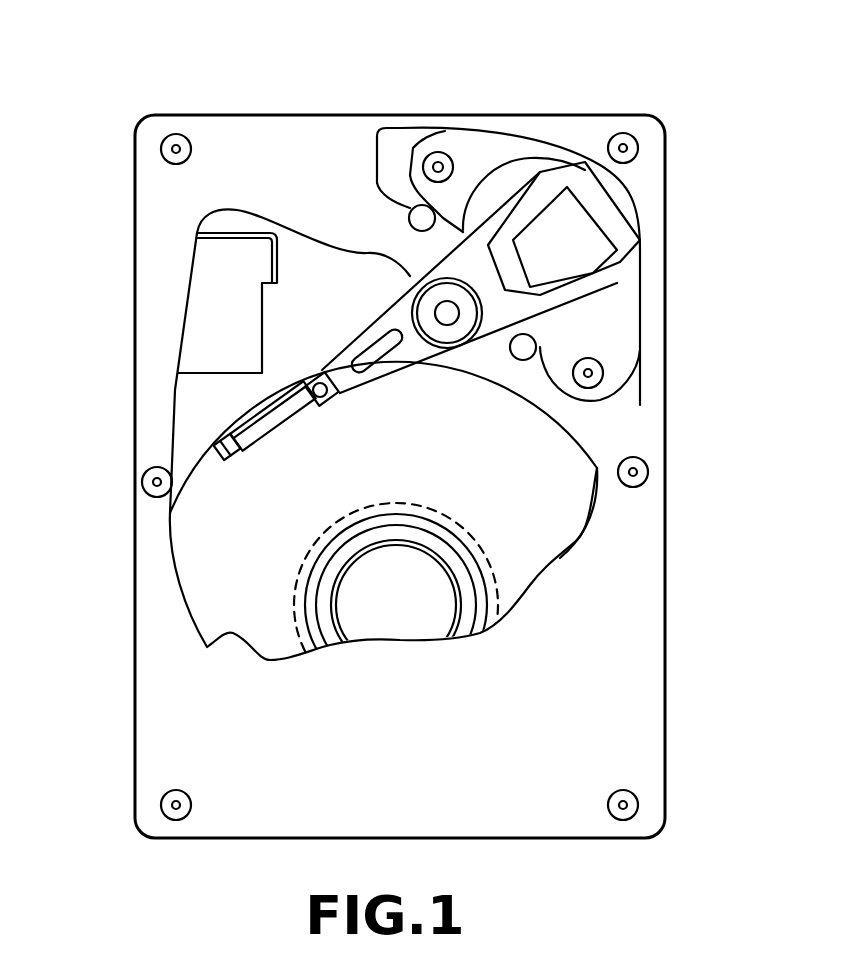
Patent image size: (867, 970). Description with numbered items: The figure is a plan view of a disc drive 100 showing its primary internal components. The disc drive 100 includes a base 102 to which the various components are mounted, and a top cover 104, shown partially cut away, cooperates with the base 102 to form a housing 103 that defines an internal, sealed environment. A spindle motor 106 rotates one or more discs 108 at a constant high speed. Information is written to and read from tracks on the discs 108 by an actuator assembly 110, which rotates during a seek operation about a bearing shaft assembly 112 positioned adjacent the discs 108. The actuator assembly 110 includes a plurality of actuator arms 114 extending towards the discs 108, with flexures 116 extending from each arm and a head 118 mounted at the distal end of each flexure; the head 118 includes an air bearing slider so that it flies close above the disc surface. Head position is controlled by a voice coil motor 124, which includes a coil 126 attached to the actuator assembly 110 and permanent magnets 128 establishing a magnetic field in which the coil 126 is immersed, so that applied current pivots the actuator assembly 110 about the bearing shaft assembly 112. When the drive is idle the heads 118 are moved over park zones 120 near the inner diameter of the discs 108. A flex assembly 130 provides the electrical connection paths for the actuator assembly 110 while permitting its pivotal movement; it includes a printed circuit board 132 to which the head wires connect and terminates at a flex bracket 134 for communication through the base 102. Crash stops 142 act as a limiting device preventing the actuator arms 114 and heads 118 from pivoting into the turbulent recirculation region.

The disc drive 100 is at (175, 76).
The base 102 is at (200, 432).
The housing 103 is at (606, 425).
The top cover 104 is at (180, 693).
The spindle motor 106 is at (397, 612).
The discs 108 is at (548, 528).
The actuator assembly 110 is at (431, 378).
The bearing shaft assembly 112 is at (460, 327).
The actuator arms 114 is at (387, 367).
The flexures 116 is at (272, 425).
The head 118 is at (212, 462).
The park zones 120 is at (293, 600).
The voice coil motor 124 is at (479, 108).
The coil 126 is at (620, 248).
The permanent magnets 128 is at (477, 193).
The flex assembly 130 is at (370, 314).
The printed circuit board 132 is at (410, 280).
The flex bracket 134 is at (213, 313).
The crash stops 142 is at (410, 207).